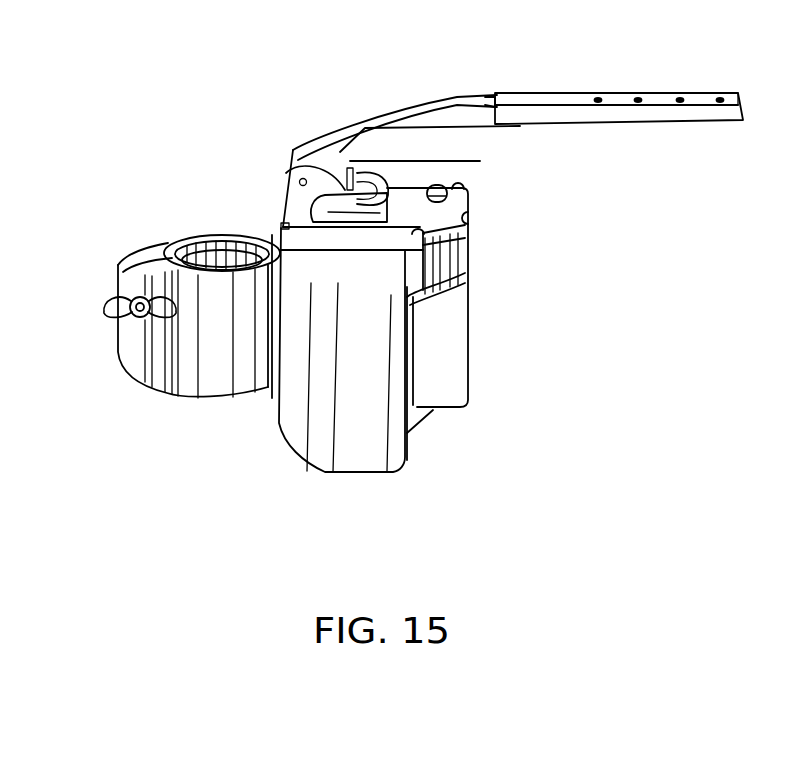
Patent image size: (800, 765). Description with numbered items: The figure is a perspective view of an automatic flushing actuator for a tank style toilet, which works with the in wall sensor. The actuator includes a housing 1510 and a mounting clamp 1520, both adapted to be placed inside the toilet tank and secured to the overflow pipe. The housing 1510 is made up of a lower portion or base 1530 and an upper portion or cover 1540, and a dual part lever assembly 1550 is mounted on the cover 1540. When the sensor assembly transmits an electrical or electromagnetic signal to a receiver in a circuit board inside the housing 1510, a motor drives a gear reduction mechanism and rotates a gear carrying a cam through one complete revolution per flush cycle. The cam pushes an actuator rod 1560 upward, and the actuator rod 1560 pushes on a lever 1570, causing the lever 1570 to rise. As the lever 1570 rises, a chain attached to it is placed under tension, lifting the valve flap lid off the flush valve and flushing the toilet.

The housing 1510 is at (622, 317).
The mounting clamp 1520 is at (156, 218).
The base 1530 is at (268, 466).
The cover 1540 is at (470, 190).
The dual part lever assembly 1550 is at (326, 90).
The actuator rod 1560 is at (480, 162).
The lever 1570 is at (537, 93).